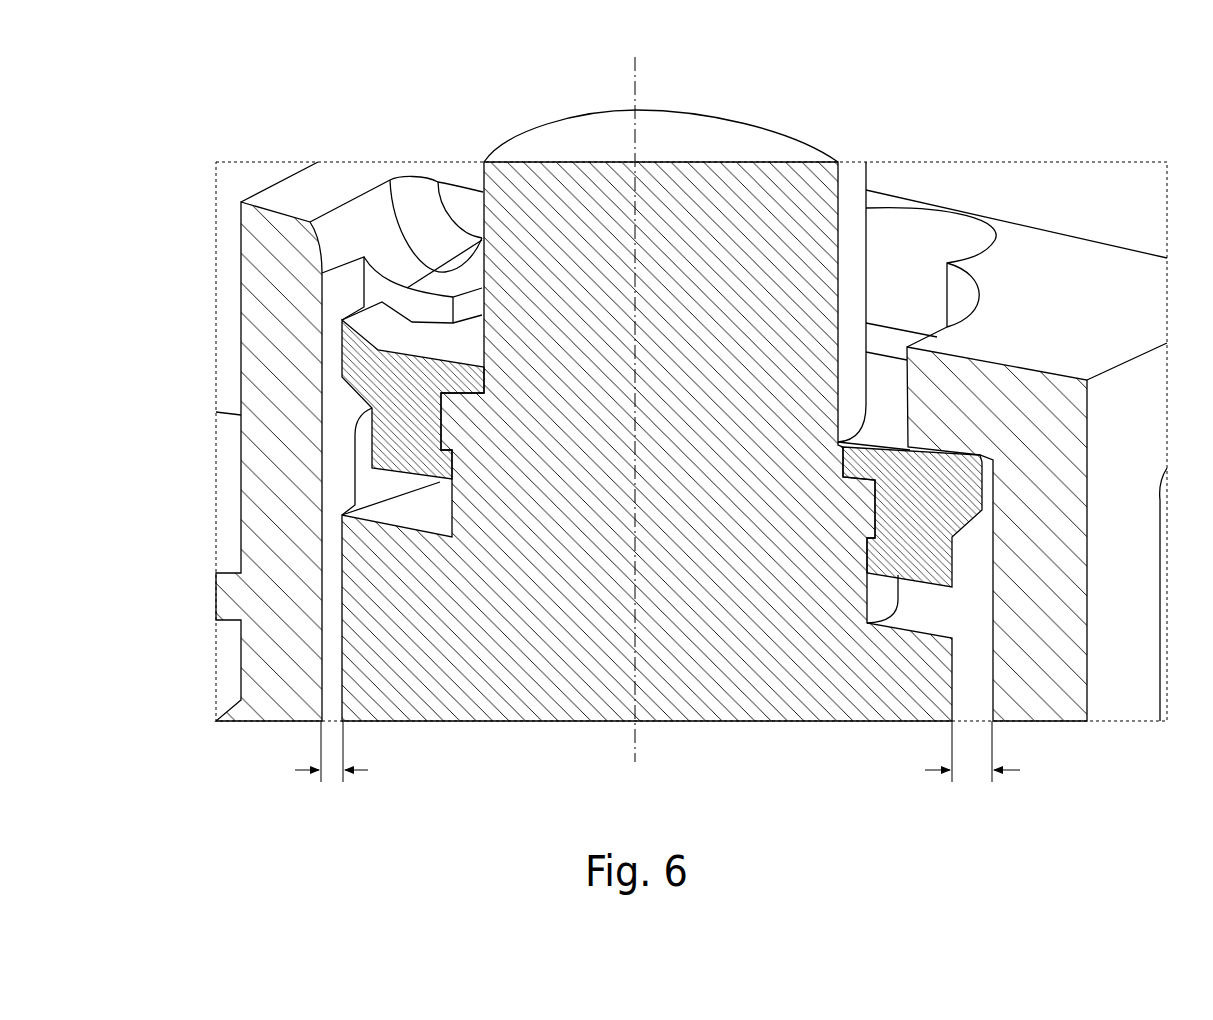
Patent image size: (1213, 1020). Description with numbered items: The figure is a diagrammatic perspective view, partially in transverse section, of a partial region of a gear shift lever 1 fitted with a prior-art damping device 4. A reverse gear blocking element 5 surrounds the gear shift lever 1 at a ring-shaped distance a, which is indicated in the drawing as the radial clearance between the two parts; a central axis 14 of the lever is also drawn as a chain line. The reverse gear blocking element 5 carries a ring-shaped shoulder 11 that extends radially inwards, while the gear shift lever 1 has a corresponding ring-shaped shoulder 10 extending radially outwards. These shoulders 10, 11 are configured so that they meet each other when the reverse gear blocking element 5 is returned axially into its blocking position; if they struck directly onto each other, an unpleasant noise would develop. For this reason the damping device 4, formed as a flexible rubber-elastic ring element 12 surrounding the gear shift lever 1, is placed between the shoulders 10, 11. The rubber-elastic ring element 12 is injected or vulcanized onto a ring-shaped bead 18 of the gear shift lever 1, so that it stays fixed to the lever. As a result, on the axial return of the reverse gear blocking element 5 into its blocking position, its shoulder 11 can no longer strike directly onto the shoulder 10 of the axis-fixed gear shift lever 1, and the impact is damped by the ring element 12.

The gear shift lever 1 is at (568, 140).
The damping device 4 is at (432, 482).
The reverse gear blocking element 5 is at (273, 724).
The ring-shaped shoulder 10 is at (937, 628).
The ring-shaped shoulder 11 is at (932, 460).
The rubber-elastic ring element 12 is at (342, 327).
The central axis 14 is at (635, 73).
The ring-shaped bead 18 is at (877, 510).
The ring-shaped distance a is at (330, 763).